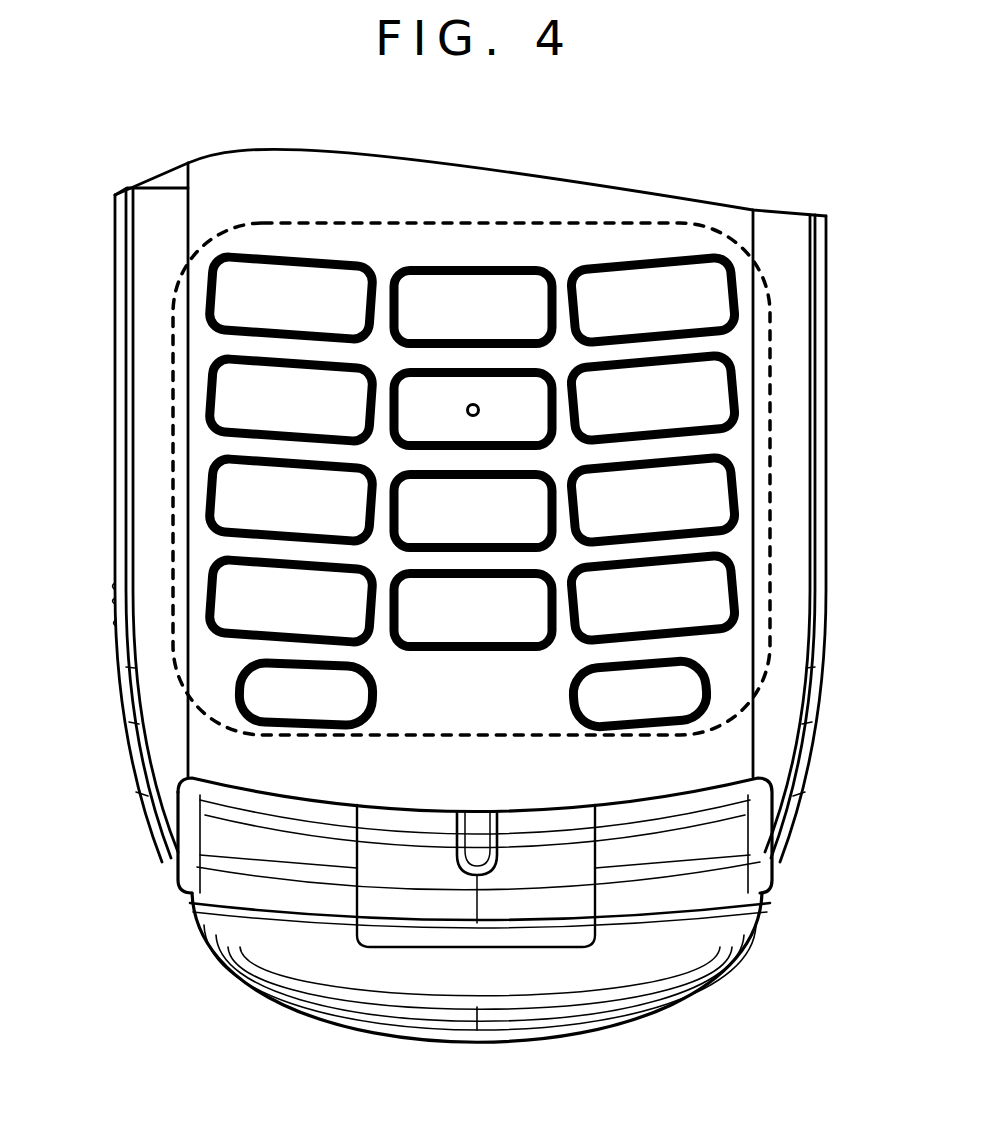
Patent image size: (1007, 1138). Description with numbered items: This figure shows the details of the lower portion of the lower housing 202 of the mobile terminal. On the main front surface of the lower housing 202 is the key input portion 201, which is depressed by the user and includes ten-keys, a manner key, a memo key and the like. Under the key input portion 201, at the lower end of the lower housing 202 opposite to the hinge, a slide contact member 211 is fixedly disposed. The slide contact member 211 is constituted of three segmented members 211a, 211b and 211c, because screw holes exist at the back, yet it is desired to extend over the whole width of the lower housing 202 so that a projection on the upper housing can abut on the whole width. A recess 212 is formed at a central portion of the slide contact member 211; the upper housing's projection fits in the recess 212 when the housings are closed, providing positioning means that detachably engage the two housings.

The key input portion 201 is at (173, 383).
The lower housing 202 is at (835, 305).
The slide contact member 211 is at (447, 898).
The segmented member 211a is at (393, 877).
The segmented member 211b is at (247, 848).
The segmented member 211c is at (703, 850).
The recess 212 is at (480, 843).